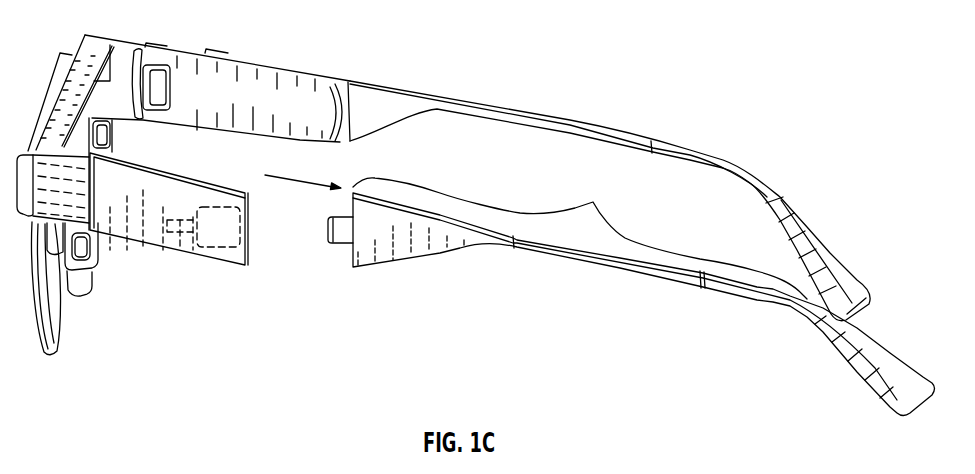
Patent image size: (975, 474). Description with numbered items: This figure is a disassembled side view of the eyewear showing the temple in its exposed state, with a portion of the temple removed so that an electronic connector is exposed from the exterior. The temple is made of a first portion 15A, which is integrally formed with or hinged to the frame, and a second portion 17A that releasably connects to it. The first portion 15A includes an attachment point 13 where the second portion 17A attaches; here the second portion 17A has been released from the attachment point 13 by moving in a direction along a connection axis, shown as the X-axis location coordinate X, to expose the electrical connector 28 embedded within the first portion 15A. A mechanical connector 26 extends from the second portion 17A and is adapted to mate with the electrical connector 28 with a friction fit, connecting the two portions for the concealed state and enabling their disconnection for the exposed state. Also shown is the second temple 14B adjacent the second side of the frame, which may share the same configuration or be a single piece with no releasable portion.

The second temple 14B is at (612, 130).
The first portion 15A is at (250, 188).
The attachment point 13 is at (249, 230).
The electrical connector 28 is at (220, 247).
The mechanical connector 26 is at (340, 245).
The second portion 17A is at (595, 199).
The X-axis location coordinate X is at (293, 183).